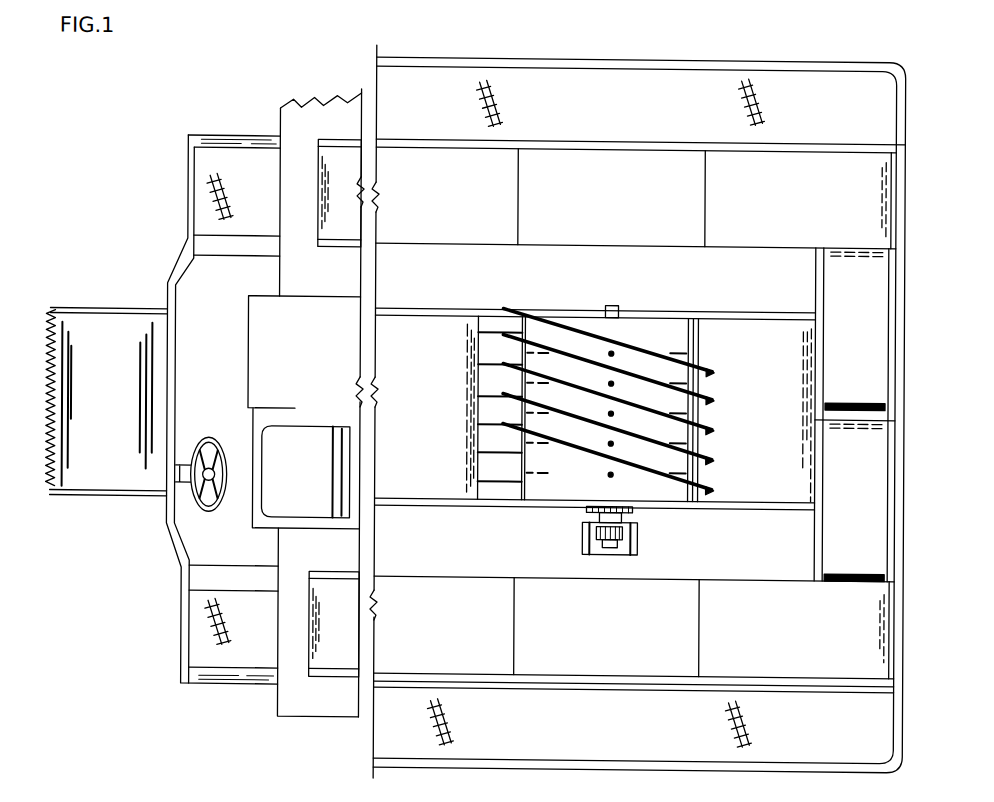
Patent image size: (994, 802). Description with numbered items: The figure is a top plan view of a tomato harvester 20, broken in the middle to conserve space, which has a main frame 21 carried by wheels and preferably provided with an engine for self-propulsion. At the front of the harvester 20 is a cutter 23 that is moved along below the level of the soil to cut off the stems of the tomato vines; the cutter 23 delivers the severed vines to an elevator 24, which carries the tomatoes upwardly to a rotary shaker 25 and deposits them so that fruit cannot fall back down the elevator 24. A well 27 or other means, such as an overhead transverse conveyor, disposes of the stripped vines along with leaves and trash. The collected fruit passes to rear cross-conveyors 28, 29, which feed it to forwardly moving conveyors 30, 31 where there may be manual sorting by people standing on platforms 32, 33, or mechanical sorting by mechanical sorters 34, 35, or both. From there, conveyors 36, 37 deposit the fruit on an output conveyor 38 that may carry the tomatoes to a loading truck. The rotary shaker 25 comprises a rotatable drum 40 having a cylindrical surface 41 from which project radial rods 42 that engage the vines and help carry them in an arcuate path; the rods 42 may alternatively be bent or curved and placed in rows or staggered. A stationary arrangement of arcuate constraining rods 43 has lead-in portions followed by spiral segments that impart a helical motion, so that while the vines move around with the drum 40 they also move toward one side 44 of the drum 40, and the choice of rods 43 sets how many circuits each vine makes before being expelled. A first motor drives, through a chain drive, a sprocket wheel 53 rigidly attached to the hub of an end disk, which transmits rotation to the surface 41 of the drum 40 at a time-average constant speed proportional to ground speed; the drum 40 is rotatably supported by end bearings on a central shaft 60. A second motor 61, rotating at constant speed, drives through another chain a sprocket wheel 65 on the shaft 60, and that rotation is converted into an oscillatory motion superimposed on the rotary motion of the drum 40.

The tomato harvester 20 is at (209, 108).
The main frame 21 is at (295, 722).
The cutter 23 is at (47, 436).
The elevator 24 is at (428, 330).
The rotary shaker 25 is at (547, 493).
The well 27 is at (713, 293).
The rear cross-conveyor 28 is at (870, 365).
The rear cross-conveyor 29 is at (870, 467).
The forwardly moving conveyor 30 is at (824, 232).
The forwardly moving conveyor 31 is at (800, 626).
The platform 32 is at (622, 232).
The platform 33 is at (624, 624).
The mechanical sorter 34 is at (459, 233).
The mechanical sorter 35 is at (465, 626).
The conveyor 36 is at (619, 116).
The conveyor 37 is at (610, 746).
The output conveyor 38 is at (290, 202).
The rotatable drum 40 is at (568, 492).
The cylindrical surface 41 is at (642, 497).
The radial rods 42 is at (513, 384).
The arcuate constraining rods 43 is at (656, 376).
The side of the drum 44 is at (587, 311).
The sprocket wheel 53 is at (637, 514).
The central shaft 60 is at (621, 291).
The second motor 61 is at (622, 560).
The sprocket wheel 65 is at (638, 535).